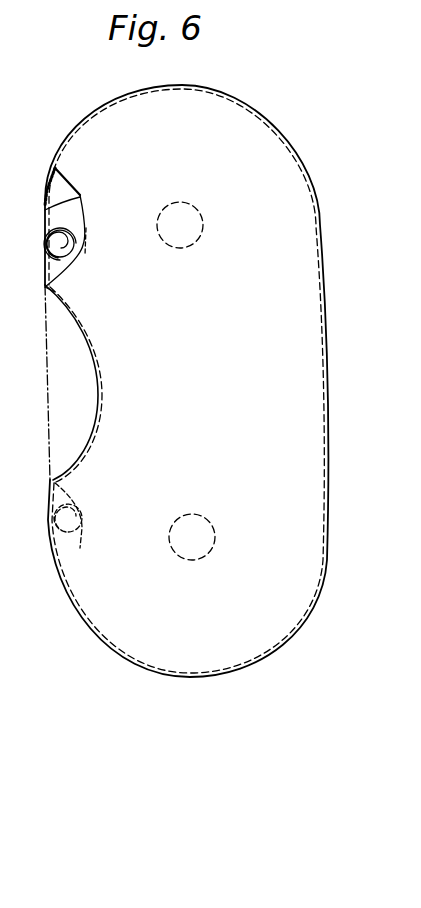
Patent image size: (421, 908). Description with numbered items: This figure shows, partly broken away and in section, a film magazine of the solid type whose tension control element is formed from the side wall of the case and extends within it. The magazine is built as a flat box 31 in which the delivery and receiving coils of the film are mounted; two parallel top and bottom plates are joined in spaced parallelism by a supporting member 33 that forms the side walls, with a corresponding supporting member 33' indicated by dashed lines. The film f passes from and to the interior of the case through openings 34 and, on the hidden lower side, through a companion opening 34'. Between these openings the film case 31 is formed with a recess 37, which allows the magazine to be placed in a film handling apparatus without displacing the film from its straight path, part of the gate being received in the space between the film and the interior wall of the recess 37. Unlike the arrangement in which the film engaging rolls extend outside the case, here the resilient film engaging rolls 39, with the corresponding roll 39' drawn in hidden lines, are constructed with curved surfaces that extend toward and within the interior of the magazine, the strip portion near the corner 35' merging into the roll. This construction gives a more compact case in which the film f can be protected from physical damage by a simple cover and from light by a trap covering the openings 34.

The flat box 31 is at (286, 152).
The supporting member 33 is at (204, 225).
The lower aperture 33' is at (207, 524).
The openings 34 is at (78, 227).
The lower tab 34' is at (85, 524).
The fold corner 35' is at (74, 284).
The recess 37 is at (73, 383).
The resilient film engaging rolls 39 is at (80, 237).
The lower coil spring 39' is at (94, 511).
The film f is at (47, 407).